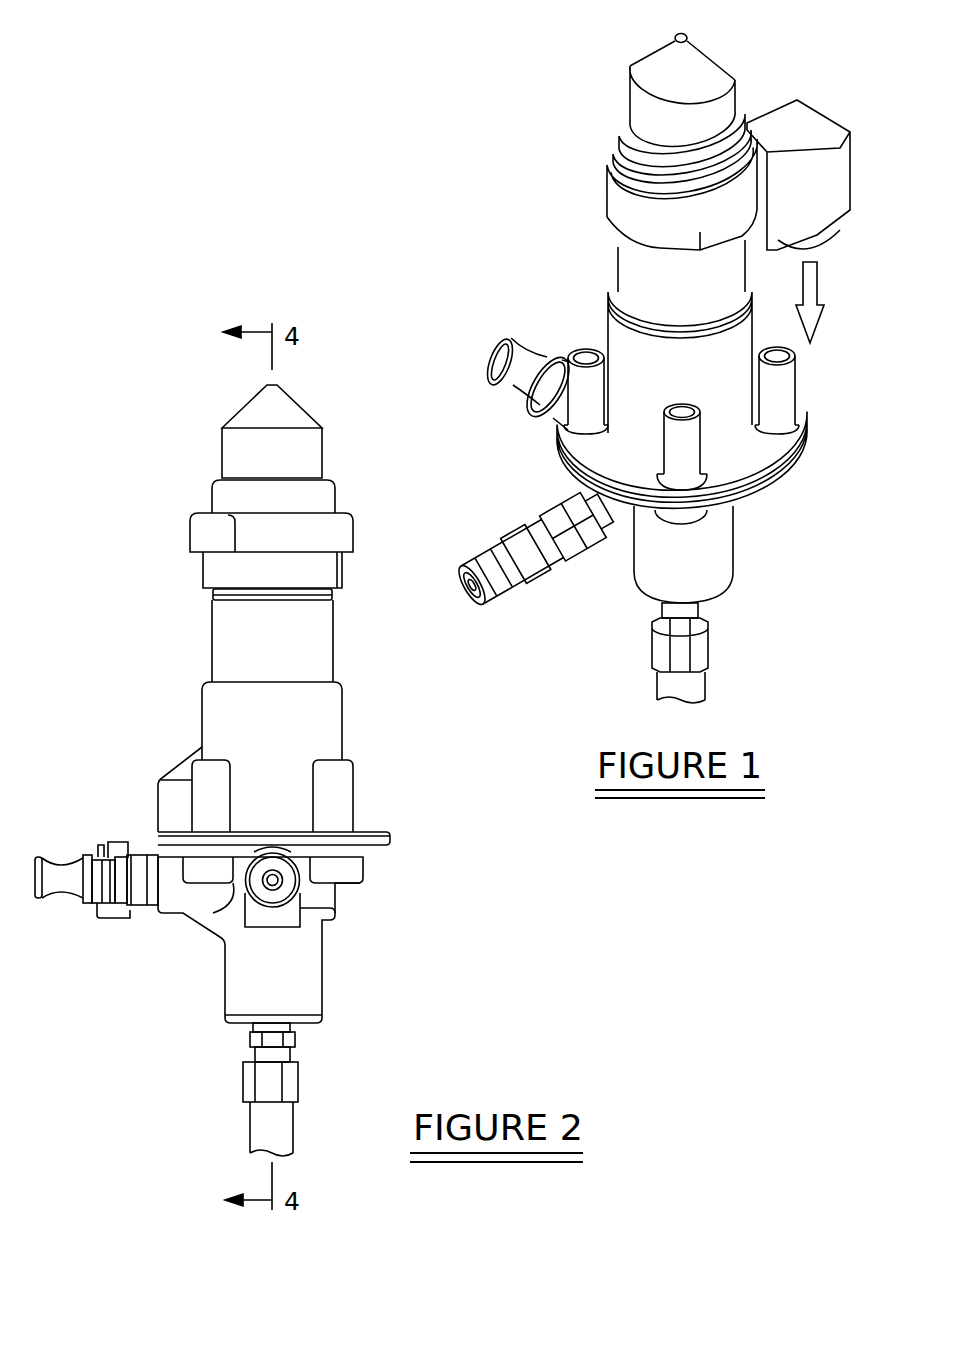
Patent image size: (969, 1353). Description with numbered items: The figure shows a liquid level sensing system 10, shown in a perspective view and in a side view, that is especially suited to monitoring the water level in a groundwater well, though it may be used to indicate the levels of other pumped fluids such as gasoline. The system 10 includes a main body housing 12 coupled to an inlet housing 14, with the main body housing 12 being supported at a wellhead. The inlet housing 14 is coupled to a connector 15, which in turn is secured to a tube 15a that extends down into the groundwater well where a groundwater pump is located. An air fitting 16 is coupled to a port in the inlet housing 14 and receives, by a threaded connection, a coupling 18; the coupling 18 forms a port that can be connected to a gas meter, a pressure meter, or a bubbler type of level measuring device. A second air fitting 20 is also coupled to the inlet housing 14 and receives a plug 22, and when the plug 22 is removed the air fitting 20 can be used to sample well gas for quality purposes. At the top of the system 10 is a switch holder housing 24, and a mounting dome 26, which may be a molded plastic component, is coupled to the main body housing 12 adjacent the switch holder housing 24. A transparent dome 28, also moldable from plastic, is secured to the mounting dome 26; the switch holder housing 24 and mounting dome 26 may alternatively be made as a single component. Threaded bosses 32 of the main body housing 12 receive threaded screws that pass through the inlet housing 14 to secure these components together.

In FIG. 1, the liquid level sensing system 10 is at (521, 218).
In FIG. 2, the liquid level sensing system 10 is at (180, 358).
In FIG. 1, the main body housing 12 is at (605, 317).
In FIG. 2, the main body housing 12 is at (225, 618).
In FIG. 1, the inlet housing 14 is at (740, 553).
In FIG. 2, the inlet housing 14 is at (350, 872).
In FIG. 1, the connector 15 is at (703, 643).
In FIG. 2, the connector 15 is at (290, 1082).
In FIG. 1, the tube 15a is at (670, 683).
In FIG. 2, the tube 15a is at (265, 1127).
In FIG. 1, the air fitting 16 is at (573, 505).
In FIG. 1, the coupling 18 is at (512, 552).
In FIG. 2, the coupling 18 is at (283, 893).
In FIG. 1, the air fitting 20 is at (555, 407).
In FIG. 2, the air fitting 20 is at (120, 862).
In FIG. 1, the plug 22 is at (512, 362).
In FIG. 2, the plug 22 is at (62, 870).
In FIG. 1, the switch holder housing 24 is at (797, 117).
In FIG. 2, the switch holder housing 24 is at (348, 548).
In FIG. 1, the mounting dome 26 is at (620, 182).
In FIG. 2, the mounting dome 26 is at (330, 502).
In FIG. 1, the transparent dome 28 is at (698, 58).
In FIG. 2, the transparent dome 28 is at (225, 452).
In FIG. 1, the threaded bosses 32 is at (778, 385).